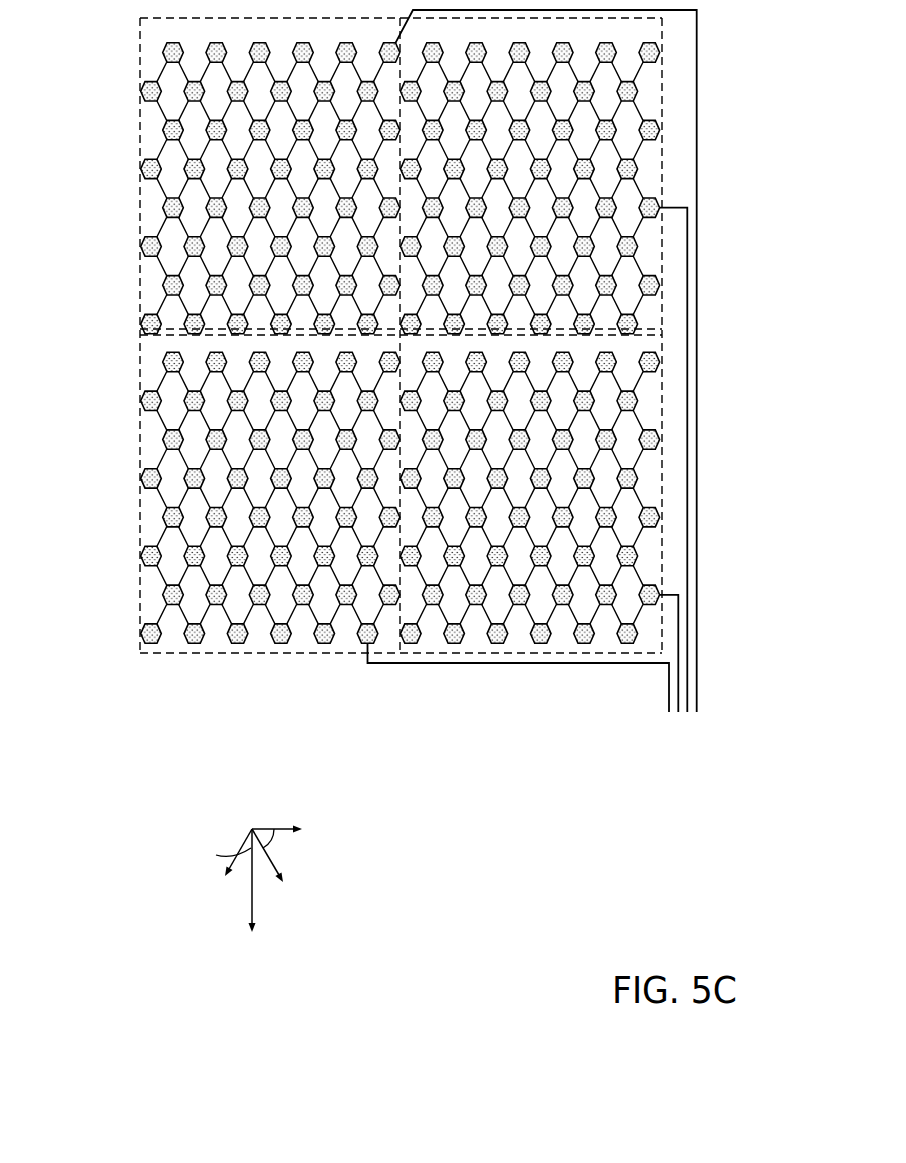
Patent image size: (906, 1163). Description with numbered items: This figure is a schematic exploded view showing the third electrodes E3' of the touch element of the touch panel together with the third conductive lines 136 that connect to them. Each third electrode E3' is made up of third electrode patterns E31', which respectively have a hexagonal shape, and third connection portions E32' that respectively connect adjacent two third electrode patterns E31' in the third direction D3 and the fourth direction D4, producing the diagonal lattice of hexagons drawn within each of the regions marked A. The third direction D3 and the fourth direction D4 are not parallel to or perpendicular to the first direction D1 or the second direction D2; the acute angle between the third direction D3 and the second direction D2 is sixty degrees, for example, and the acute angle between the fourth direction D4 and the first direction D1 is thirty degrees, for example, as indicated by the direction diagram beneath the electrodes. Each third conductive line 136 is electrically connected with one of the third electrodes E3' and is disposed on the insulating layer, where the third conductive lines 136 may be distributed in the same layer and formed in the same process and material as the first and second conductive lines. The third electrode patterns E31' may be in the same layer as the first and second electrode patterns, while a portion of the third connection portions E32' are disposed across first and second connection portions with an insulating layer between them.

The electrode region A is at (140, 19).
The third electrode E3' is at (406, 345).
The third electrode patterns E31' is at (360, 343).
The third connection portions E32' is at (351, 343).
The third conductive lines 136 is at (669, 717).
The first direction D1 is at (258, 900).
The second direction D2 is at (363, 829).
The third direction D3 is at (346, 873).
The fourth direction D4 is at (157, 866).